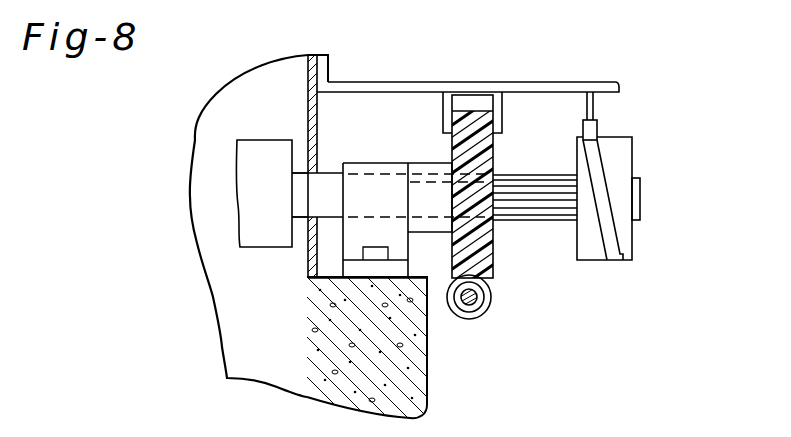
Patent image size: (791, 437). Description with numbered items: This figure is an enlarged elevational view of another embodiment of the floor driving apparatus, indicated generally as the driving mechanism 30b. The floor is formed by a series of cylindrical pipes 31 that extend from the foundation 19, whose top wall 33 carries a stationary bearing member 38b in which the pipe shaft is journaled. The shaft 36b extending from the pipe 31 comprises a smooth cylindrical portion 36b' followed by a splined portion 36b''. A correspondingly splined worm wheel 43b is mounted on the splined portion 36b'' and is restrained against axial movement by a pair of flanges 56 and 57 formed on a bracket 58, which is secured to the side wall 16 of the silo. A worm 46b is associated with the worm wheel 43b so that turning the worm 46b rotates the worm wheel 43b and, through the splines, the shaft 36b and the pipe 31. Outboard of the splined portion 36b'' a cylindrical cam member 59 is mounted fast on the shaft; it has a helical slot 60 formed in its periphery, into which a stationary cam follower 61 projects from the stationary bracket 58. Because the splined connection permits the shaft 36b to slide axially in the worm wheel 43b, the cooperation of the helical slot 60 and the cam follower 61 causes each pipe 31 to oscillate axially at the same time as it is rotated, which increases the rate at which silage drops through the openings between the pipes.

The side wall 16 is at (308, 77).
The foundation 19 is at (427, 376).
The driving mechanism 30b is at (662, 202).
The cylindrical pipe 31 is at (264, 139).
The top wall 33 is at (428, 290).
The shaft 36b is at (329, 167).
The cylindrical portion 36b' is at (281, 233).
The splined portion 36b'' is at (600, 217).
The bearing member 38b is at (378, 162).
The worm wheel 43b is at (477, 114).
The worm 46b is at (478, 312).
The flange 56 is at (440, 100).
The flange 57 is at (503, 116).
The bracket 58 is at (343, 82).
The cylindrical cam member 59 is at (626, 137).
The helical slot 60 is at (620, 254).
The cam follower 61 is at (597, 125).